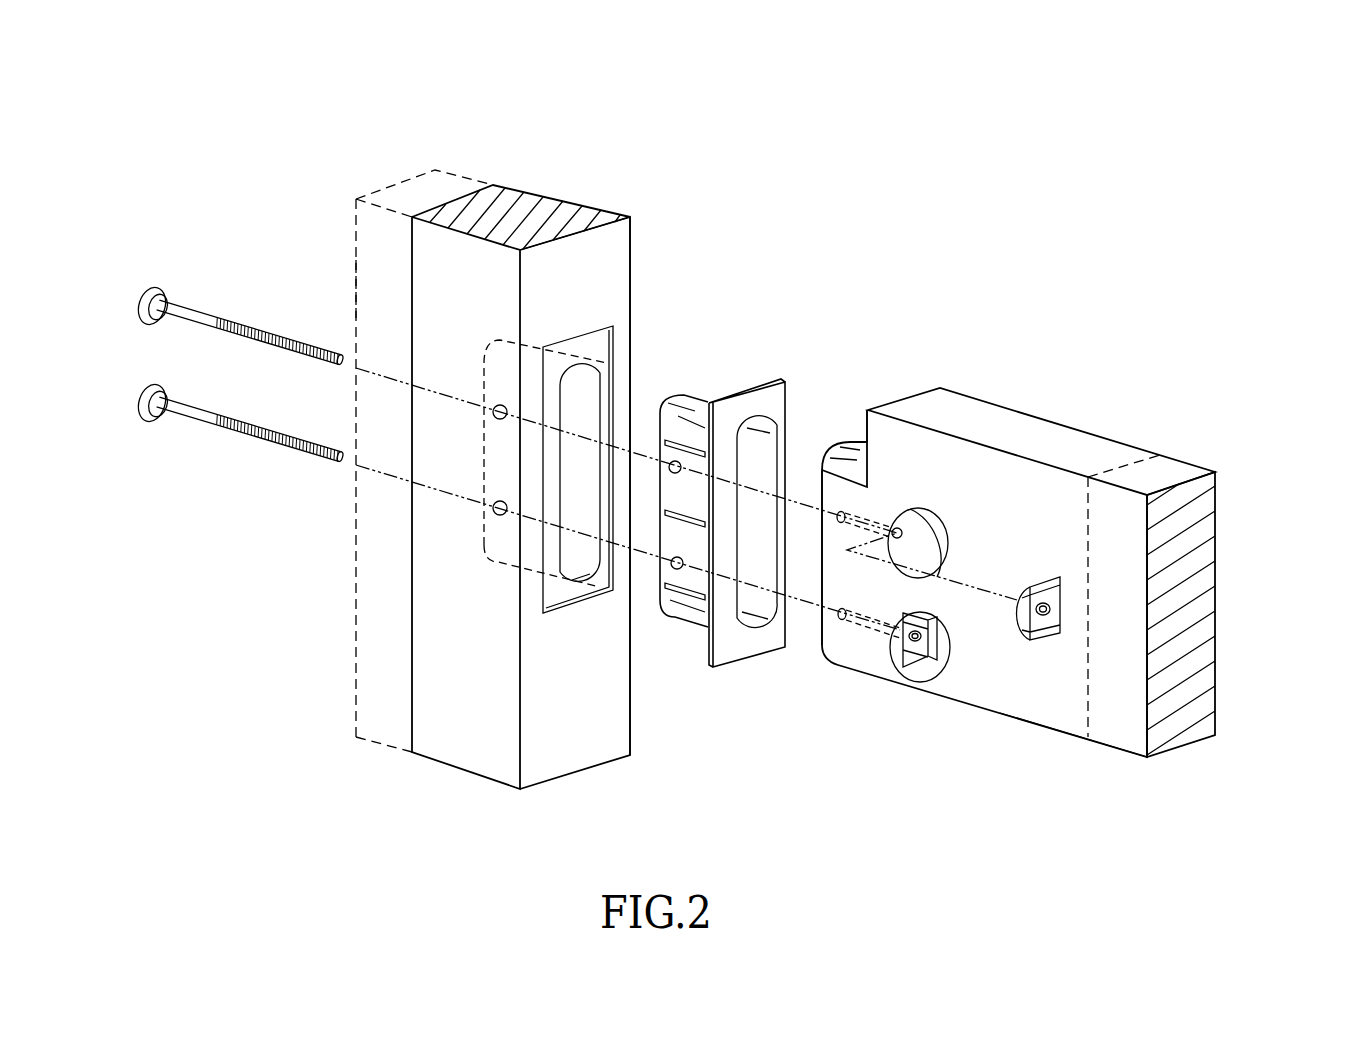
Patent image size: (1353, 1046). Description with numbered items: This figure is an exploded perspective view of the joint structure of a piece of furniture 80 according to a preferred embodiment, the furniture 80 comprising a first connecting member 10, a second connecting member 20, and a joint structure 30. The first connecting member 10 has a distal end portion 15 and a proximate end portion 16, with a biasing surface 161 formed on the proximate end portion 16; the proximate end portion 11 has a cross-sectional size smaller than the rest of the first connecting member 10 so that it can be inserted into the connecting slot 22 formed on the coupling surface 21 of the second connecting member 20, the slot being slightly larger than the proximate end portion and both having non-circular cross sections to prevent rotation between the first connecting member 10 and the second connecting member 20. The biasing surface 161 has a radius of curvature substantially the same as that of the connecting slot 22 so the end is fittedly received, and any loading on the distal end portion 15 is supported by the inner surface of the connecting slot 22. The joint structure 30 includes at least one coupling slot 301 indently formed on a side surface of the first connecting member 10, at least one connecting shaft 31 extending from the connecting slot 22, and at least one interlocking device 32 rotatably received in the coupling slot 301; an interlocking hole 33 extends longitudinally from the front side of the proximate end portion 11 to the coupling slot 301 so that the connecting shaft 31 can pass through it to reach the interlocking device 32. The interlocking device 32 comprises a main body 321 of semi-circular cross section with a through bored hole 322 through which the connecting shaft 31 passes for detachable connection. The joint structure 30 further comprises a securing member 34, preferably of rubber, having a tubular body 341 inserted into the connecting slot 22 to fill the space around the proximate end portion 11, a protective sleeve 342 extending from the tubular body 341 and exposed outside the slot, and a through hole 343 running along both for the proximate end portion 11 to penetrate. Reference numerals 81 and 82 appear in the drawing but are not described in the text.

The first connecting member 10 is at (975, 365).
The proximate end portion 11 is at (855, 437).
The distal end portion 15 is at (1117, 758).
The proximate end portion 16 is at (835, 437).
The biasing surface 161 is at (867, 452).
The second connecting member 20 is at (478, 170).
The coupling surface 21 is at (607, 295).
The connecting slot 22 is at (593, 403).
The joint structure 30 is at (1112, 378).
The coupling slot 301 is at (933, 505).
The connecting shaft 31 is at (198, 318).
The interlocking device 32 is at (1037, 587).
The main body 321 is at (903, 643).
The through bored hole 322 is at (1048, 607).
The interlocking hole 33 is at (842, 622).
The securing member 34 is at (688, 647).
The tubular body 341 is at (668, 532).
The protective sleeve 342 is at (748, 403).
The through hole 343 is at (743, 617).
The furniture 80 is at (670, 188).
The wall section 81 is at (1107, 505).
The wall surface 82 is at (384, 287).